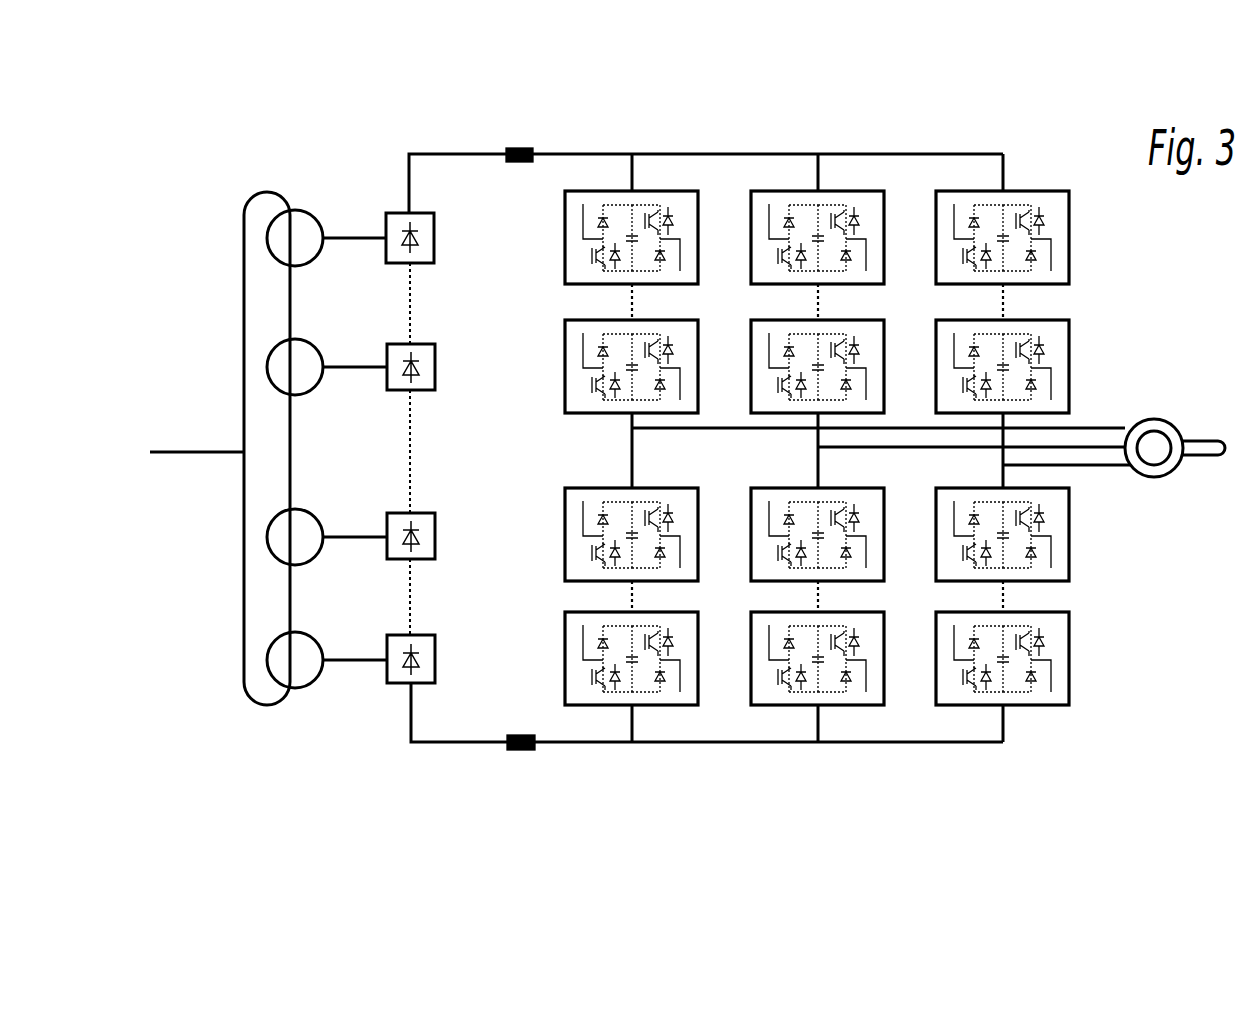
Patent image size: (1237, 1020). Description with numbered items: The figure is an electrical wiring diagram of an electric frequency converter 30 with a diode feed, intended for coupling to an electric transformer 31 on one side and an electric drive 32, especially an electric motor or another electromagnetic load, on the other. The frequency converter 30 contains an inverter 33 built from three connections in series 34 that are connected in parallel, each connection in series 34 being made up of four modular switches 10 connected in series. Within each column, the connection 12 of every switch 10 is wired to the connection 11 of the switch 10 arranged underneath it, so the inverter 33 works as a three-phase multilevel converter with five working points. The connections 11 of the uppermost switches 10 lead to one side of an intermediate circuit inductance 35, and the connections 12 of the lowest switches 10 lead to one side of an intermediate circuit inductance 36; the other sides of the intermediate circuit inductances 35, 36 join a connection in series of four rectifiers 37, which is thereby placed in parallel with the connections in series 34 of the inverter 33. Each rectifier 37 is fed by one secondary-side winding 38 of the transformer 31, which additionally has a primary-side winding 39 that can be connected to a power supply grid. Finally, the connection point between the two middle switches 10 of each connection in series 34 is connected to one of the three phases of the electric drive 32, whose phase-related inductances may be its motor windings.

The electric frequency converter 30 is at (1147, 695).
The electric transformer 31 is at (288, 720).
The electric drive 32 is at (1172, 425).
The inverter 33 is at (1068, 766).
The connection in series 34 is at (770, 160).
The intermediate circuit inductance 35 is at (527, 163).
The intermediate circuit inductance 36 is at (525, 735).
The rectifier 37 is at (398, 217).
The secondary-side winding 38 is at (308, 375).
The primary-side winding 39 is at (262, 400).
The modular switch 10 is at (1053, 337).
The connection 11 is at (819, 170).
The connection 12 is at (889, 170).